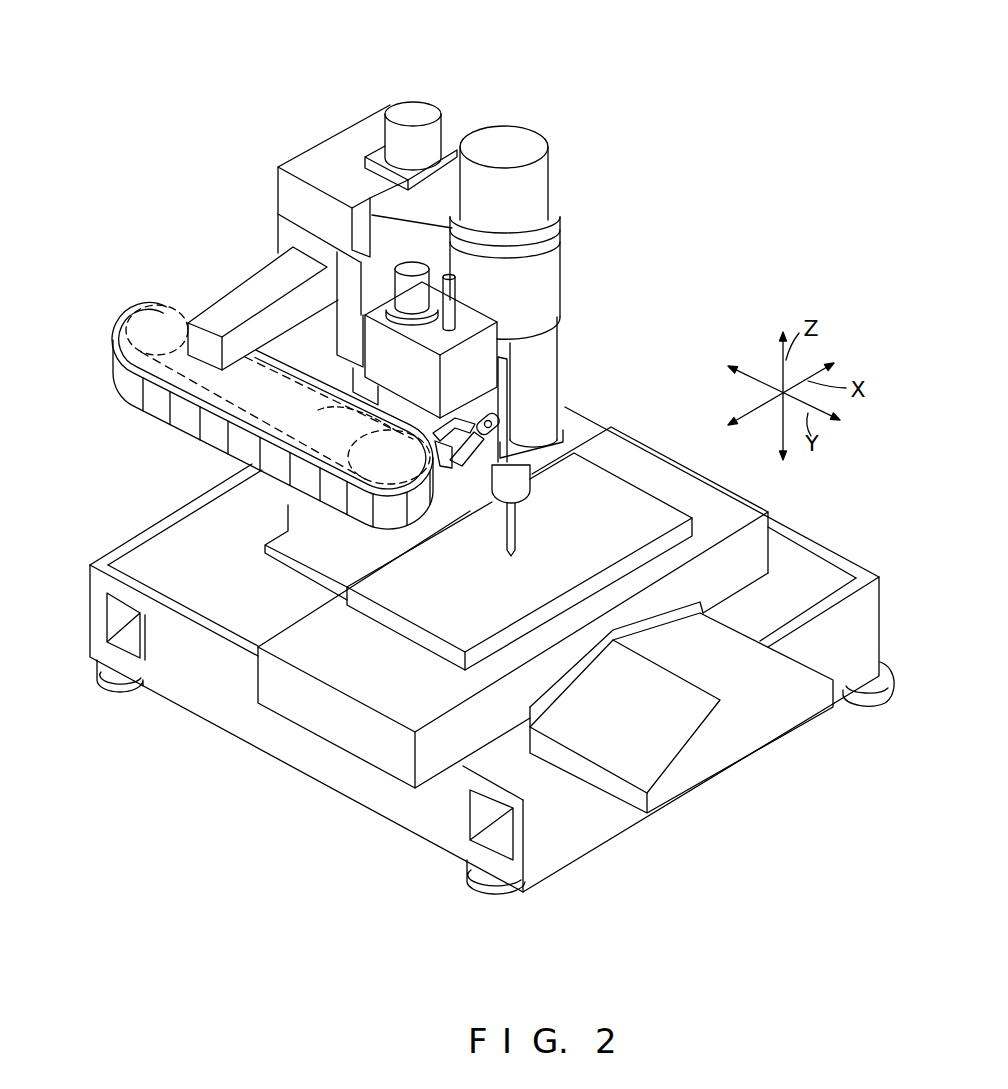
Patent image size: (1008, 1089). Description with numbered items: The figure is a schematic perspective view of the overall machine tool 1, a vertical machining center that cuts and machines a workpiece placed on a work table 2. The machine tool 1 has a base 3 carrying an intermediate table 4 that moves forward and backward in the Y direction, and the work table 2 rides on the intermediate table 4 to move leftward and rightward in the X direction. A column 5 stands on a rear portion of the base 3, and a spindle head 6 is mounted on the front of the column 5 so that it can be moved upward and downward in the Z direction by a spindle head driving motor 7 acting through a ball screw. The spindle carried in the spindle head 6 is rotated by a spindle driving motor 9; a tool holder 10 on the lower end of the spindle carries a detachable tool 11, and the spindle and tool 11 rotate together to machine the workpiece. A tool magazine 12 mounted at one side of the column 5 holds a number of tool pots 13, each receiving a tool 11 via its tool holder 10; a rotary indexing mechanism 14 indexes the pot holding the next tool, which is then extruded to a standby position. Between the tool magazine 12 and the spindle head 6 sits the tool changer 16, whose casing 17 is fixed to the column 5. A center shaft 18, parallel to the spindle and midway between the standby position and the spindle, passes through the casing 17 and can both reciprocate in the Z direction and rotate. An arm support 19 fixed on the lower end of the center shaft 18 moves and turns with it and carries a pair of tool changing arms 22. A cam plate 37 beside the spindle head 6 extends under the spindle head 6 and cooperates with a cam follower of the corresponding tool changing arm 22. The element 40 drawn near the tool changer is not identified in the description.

The machine tool 1 is at (603, 182).
The work table 2 is at (622, 502).
The base 3 is at (808, 577).
The intermediate table 4 is at (730, 521).
The column 5 is at (313, 158).
The spindle head 6 is at (545, 352).
The spindle head driving motor 7 is at (418, 104).
The spindle driving motor 9 is at (500, 140).
The tool holder 10 is at (528, 483).
The tool 11 is at (517, 522).
The tool magazine 12 is at (133, 308).
The tool pots 13 is at (275, 480).
The rotary indexing mechanism 14 is at (118, 320).
The tool changer 16 is at (484, 303).
The casing 17 is at (487, 333).
The center shaft 18 is at (456, 290).
The arm support 19 is at (458, 440).
The tool changing arms 22 is at (474, 436).
The cam plate 37 is at (505, 395).
The actuator 40 is at (396, 266).